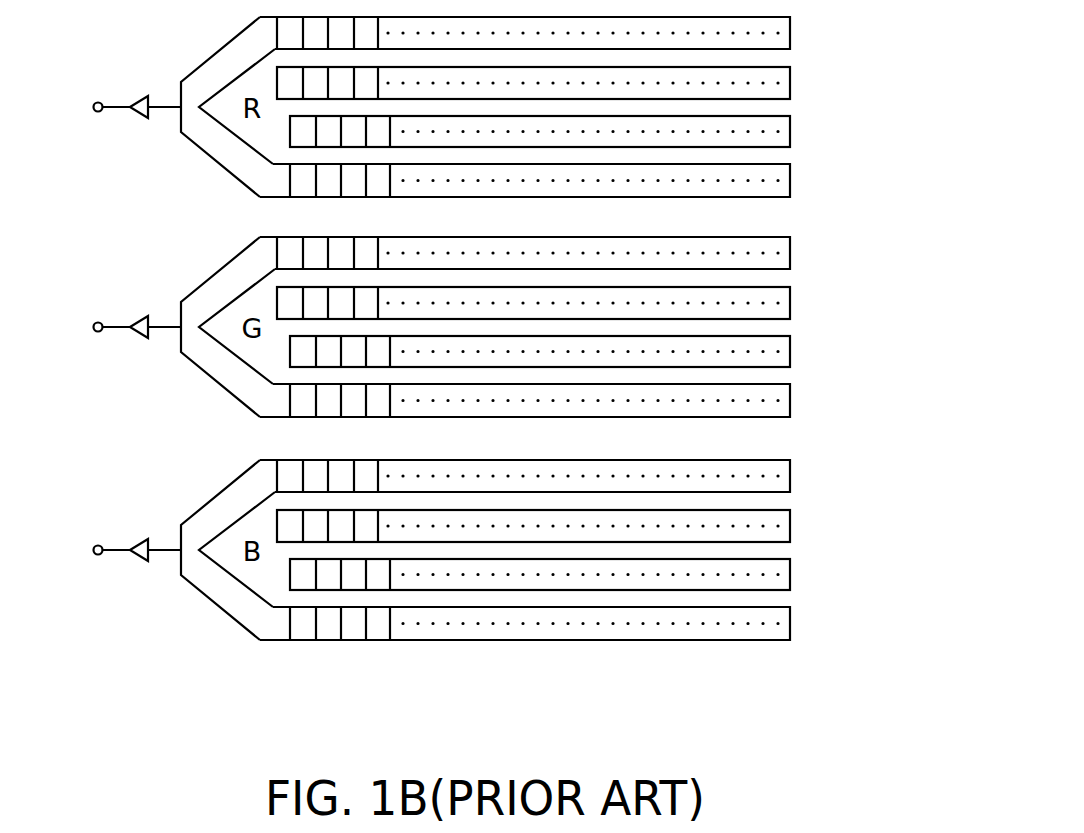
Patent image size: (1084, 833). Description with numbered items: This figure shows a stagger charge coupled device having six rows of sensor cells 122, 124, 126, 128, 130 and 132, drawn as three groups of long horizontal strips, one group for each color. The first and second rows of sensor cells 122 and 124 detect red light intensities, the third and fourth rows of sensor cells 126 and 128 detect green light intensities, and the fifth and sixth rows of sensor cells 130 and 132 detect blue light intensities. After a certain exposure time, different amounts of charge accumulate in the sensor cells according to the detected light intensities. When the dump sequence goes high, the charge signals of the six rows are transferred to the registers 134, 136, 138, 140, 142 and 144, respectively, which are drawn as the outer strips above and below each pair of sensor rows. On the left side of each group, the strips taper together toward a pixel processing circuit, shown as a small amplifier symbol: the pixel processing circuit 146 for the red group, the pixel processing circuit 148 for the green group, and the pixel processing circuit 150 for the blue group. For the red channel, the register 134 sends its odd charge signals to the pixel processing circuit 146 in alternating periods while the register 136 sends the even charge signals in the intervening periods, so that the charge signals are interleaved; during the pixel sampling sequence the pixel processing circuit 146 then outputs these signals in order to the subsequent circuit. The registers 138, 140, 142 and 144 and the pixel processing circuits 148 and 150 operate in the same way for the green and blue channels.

The first row of sensor cells 122 is at (790, 82).
The second row of sensor cells 124 is at (790, 131).
The third row of sensor cells 126 is at (579, 304).
The fourth row of sensor cells 128 is at (586, 352).
The fifth row of sensor cells 130 is at (579, 527).
The sixth row of sensor cells 132 is at (586, 575).
The register 134 is at (790, 32).
The register 136 is at (790, 180).
The register 138 is at (571, 253).
The register 140 is at (571, 401).
The register 142 is at (571, 476).
The register 144 is at (571, 624).
The pixel processing circuit 146 is at (142, 118).
The pixel processing circuit 148 is at (138, 361).
The pixel processing circuit 150 is at (138, 584).